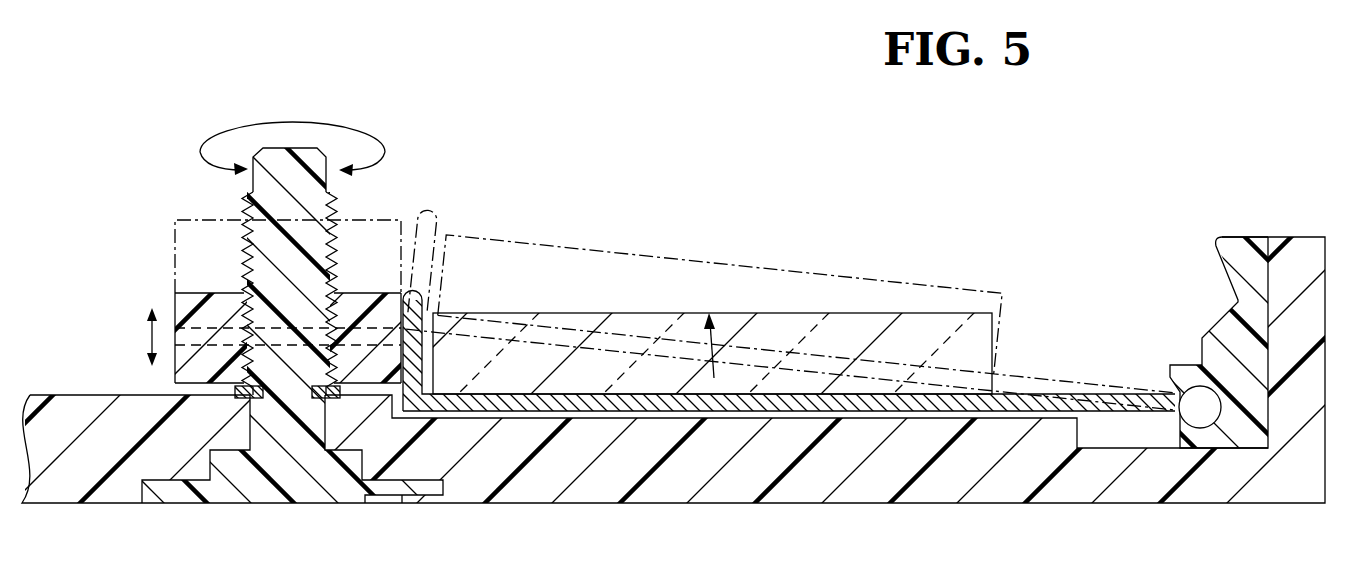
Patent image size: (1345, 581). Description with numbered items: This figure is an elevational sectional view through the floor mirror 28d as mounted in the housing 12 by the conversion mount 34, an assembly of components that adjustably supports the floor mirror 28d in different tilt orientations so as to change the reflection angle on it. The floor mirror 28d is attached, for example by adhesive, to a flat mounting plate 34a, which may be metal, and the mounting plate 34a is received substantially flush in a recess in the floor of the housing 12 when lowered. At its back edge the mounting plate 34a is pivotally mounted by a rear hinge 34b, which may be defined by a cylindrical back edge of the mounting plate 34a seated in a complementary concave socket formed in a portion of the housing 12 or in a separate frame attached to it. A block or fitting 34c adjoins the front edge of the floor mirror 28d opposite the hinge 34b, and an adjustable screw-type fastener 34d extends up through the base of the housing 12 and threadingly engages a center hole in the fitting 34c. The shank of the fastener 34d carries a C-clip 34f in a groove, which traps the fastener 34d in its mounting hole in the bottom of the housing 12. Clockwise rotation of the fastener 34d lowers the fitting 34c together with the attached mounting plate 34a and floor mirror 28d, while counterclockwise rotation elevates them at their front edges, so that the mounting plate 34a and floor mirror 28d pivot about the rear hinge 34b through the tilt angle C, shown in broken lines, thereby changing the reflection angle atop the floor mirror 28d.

The housing 12 is at (105, 503).
The floor mirror 28d is at (633, 312).
The conversion mount 34 is at (500, 160).
The mounting plate 34a is at (850, 413).
The rear hinge 34b is at (1180, 422).
The fitting 34c is at (183, 303).
The fastener 34d is at (238, 196).
The C-clip 34f is at (313, 398).
The tilt angle C is at (722, 256).